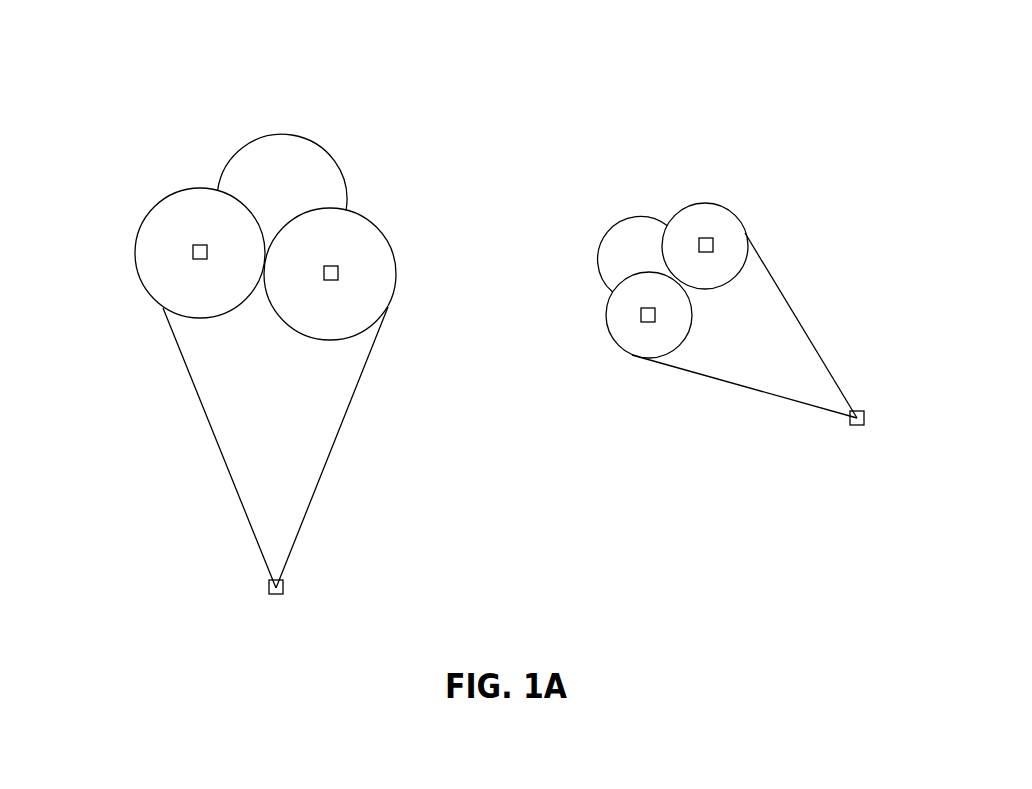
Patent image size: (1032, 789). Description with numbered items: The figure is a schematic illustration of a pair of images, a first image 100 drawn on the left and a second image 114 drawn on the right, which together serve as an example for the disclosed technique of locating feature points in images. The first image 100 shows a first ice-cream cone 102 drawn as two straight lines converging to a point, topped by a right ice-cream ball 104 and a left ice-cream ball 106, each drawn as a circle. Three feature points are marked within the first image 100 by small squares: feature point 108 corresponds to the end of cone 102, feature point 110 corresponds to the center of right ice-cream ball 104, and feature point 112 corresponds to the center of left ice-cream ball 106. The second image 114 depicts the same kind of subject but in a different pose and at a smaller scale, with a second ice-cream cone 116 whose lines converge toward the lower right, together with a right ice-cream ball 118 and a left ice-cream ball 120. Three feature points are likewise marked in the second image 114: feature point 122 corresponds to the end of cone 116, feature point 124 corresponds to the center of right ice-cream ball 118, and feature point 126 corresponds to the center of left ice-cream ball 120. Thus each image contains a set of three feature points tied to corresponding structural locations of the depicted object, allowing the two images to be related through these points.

The first image 100 is at (273, 70).
The first ice-cream cone 102 is at (203, 412).
The right ice-cream ball 104 is at (137, 253).
The left ice-cream ball 106 is at (395, 257).
The feature point 108 is at (278, 596).
The feature point 110 is at (200, 245).
The feature point 112 is at (331, 265).
The second image 114 is at (680, 70).
The second ice-cream cone 116 is at (738, 387).
The right ice-cream ball 118 is at (605, 312).
The left ice-cream ball 120 is at (697, 200).
The feature point 122 is at (860, 428).
The feature point 124 is at (648, 323).
The feature point 126 is at (708, 235).